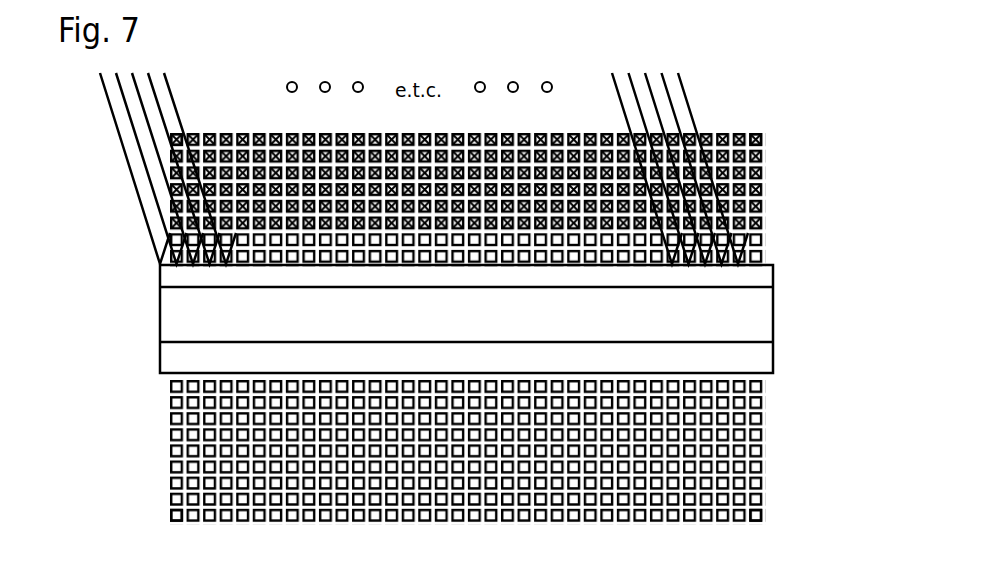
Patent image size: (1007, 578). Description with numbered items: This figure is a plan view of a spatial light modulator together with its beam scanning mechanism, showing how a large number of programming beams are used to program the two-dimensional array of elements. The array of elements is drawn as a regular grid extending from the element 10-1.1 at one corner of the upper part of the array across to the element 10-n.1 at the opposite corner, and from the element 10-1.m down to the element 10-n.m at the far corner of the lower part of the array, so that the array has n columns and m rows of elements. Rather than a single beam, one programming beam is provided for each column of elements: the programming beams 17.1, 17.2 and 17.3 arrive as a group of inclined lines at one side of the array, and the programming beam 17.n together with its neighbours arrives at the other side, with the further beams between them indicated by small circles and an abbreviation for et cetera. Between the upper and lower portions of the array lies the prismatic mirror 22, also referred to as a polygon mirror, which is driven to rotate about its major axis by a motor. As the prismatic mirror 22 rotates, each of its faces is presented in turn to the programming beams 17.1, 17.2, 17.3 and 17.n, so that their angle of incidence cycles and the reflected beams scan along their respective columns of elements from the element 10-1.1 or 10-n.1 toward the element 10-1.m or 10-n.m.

The programming beam 17.1 is at (107, 100).
The programming beam 17.2 is at (133, 127).
The programming beam 17.3 is at (157, 153).
The programming beam 17.n is at (683, 90).
The element 10-1.1 is at (178, 133).
The element 10-n.1 is at (756, 133).
The element 10-1.m is at (175, 523).
The element 10-n.m is at (762, 515).
The prismatic mirror 22 is at (773, 318).